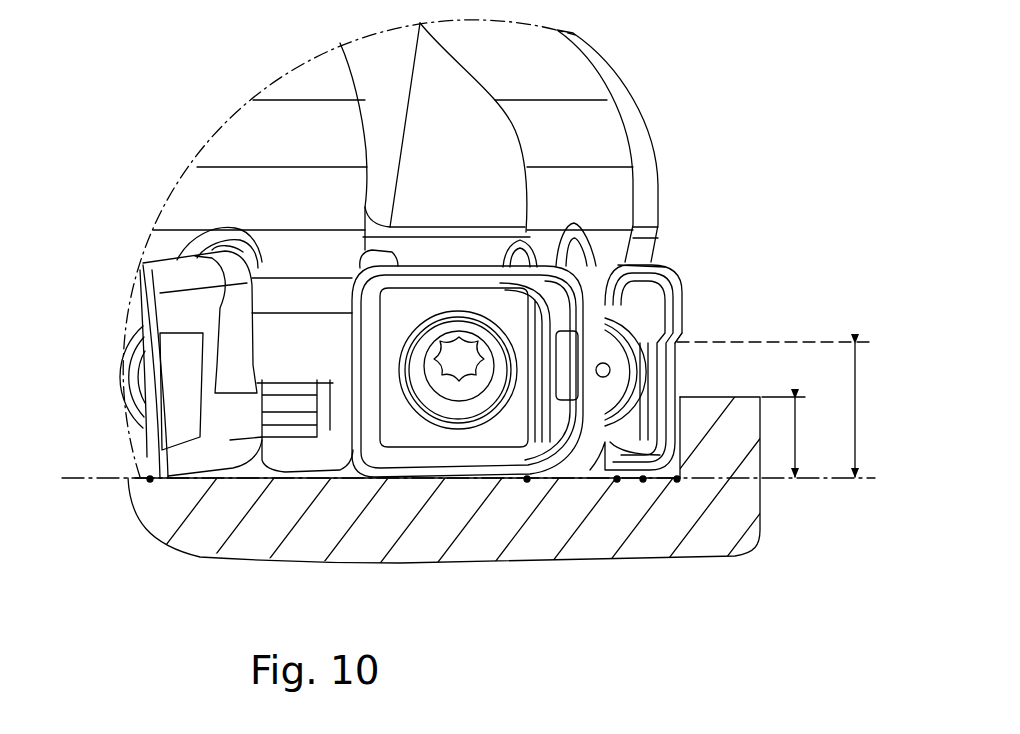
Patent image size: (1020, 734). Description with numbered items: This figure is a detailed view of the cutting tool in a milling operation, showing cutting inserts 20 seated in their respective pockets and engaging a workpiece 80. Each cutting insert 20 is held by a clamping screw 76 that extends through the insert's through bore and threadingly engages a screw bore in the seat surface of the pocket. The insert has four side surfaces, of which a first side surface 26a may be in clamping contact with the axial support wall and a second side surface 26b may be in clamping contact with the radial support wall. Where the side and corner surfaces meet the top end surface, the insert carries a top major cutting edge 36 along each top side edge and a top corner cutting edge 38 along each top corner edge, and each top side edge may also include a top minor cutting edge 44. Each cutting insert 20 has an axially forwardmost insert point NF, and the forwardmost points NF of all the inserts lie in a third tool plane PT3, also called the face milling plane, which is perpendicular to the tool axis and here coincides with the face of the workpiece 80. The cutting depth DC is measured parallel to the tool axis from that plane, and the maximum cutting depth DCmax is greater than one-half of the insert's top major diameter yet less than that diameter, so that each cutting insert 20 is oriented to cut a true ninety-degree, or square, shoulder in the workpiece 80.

The cutting insert 20 is at (643, 307).
The first side surface 26a is at (490, 265).
The second side surface 26b is at (357, 312).
The top major cutting edge 36 is at (678, 378).
The top corner cutting edge 38 is at (677, 480).
The top minor cutting edge 44 is at (617, 478).
The clamping screw 76 is at (466, 360).
The workpiece 80 is at (735, 503).
The axially forwardmost insert point NF is at (150, 483).
The third tool plane PT3 is at (467, 478).
The cutting depth DC is at (785, 437).
The maximum cutting depth DCmax is at (789, 409).